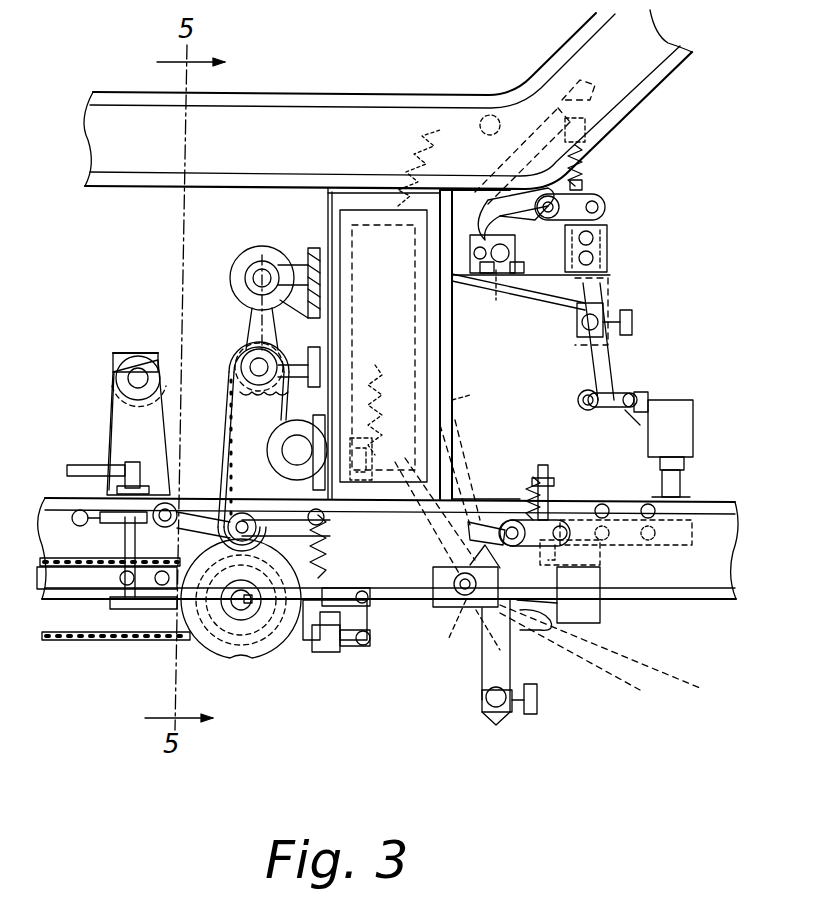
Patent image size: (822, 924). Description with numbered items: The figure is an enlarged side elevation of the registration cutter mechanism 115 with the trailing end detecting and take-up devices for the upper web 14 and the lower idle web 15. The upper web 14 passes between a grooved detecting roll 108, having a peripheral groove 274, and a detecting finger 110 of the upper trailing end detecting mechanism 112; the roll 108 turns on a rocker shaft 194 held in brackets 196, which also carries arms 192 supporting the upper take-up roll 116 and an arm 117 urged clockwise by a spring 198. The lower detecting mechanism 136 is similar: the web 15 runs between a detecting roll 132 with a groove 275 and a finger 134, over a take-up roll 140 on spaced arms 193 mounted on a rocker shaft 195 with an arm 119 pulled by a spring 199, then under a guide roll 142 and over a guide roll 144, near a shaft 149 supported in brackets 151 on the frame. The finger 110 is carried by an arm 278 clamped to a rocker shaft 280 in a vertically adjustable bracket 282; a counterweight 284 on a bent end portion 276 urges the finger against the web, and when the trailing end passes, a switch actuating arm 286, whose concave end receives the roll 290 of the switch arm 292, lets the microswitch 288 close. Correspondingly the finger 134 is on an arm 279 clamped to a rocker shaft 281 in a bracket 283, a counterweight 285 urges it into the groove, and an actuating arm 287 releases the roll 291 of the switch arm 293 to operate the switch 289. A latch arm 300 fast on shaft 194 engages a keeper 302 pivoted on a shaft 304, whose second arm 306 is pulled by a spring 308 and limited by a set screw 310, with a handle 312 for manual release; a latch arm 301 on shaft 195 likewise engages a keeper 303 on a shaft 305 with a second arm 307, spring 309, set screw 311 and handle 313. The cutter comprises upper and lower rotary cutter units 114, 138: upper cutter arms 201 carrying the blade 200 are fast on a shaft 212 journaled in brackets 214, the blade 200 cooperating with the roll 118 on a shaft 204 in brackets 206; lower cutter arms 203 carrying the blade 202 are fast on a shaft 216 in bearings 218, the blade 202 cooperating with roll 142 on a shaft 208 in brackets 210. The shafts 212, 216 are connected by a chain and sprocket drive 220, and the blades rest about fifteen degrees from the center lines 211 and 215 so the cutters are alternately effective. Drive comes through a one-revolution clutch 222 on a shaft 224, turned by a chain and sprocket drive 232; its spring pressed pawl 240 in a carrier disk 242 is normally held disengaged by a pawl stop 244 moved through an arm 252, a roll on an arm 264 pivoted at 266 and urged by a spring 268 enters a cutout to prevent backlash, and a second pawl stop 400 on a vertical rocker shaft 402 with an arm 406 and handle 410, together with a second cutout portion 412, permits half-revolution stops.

The web 14 is at (265, 313).
The idle web 15 is at (232, 433).
The grooved detecting roll 108 is at (528, 270).
The detecting finger 110 is at (563, 306).
The upper trailing end detecting mechanism 112 is at (452, 312).
The upper rotary cutter unit 114 is at (220, 340).
The registration cutter mechanism 115 is at (205, 262).
The upper take-up roll 116 is at (333, 242).
The arm 117 is at (396, 232).
The roll 118 is at (243, 256).
The arm 119 is at (442, 428).
The detecting roll 132 is at (462, 608).
The detecting finger 134 is at (470, 610).
The lower trailing end detecting mechanism 136 is at (378, 648).
The lower rotary cutter unit 138 is at (237, 468).
The take-up roll 140 is at (462, 460).
The guide roll 142 is at (277, 432).
The guide roll 144 is at (116, 385).
The shaft 149 is at (127, 375).
The brackets 151 is at (113, 424).
The arms 192 is at (446, 397).
The spaced arms 193 is at (439, 516).
The rocker shaft 194 is at (498, 262).
The rocker shaft 195 is at (440, 610).
The brackets 196 is at (455, 275).
The spring 198 is at (400, 200).
The spring 199 is at (372, 458).
The upper cutter blade 200 is at (275, 356).
The upper cutter arms 201 is at (244, 352).
The lower cutter blade 202 is at (150, 604).
The lower cutter arms 203 is at (236, 490).
The shaft 204 is at (262, 268).
The brackets 206 is at (310, 262).
The shaft 208 is at (300, 450).
The brackets 210 is at (366, 400).
The center line 211 is at (258, 307).
The shaft 212 is at (243, 366).
The brackets 214 is at (330, 348).
The center line 215 is at (252, 488).
The shaft 216 is at (237, 497).
The bearings 218 is at (330, 519).
The chain and sprocket drive 220 is at (242, 490).
The one-revolution clutch 222 is at (253, 688).
The shaft 224 is at (240, 602).
The chain and sprocket drive 232 is at (85, 642).
The pawl 240 is at (298, 642).
The pawl carrier disk 242 is at (268, 658).
The pawl stop 244 is at (338, 588).
The arm 252 is at (328, 654).
The arm 264 is at (188, 530).
The pivot 266 is at (160, 512).
The spring 268 is at (324, 560).
The peripheral groove 274 is at (513, 320).
The intermediate groove 275 is at (436, 606).
The right angle bent end portion 276 is at (612, 318).
The arm 278 is at (600, 300).
The arm 279 is at (512, 695).
The rocker shaft 280 is at (605, 334).
The rocker shaft 281 is at (505, 718).
The vertically adjustable bracket 282 is at (603, 300).
The vertically adjustable bracket 283 is at (490, 706).
The counterweight 284 is at (634, 324).
The counterweight 285 is at (538, 704).
The switch actuating arm 286 is at (578, 398).
The actuating arm 287 is at (486, 630).
The microswitch 288 is at (695, 408).
The switch 289 is at (602, 607).
The roll 290 is at (608, 406).
The roll 291 is at (510, 635).
The switch arm 292 is at (642, 416).
The switch arm 293 is at (548, 612).
The latch arm 300 is at (486, 258).
The latch arm 301 is at (520, 546).
The keeper 302 is at (520, 240).
The keeper 303 is at (478, 522).
The shaft 304 is at (546, 216).
The shaft 305 is at (533, 478).
The second arm 306 is at (590, 204).
The second arm 307 is at (570, 524).
The spring 308 is at (586, 130).
The spring 309 is at (552, 479).
The set screw 310 is at (588, 196).
The adjustable set screw 311 is at (562, 510).
The handle 312 is at (600, 207).
The handle 313 is at (575, 540).
The second pawl stop 400 is at (162, 612).
The vertical rocker shaft 402 is at (120, 575).
The arm 406 is at (102, 524).
The handle 410 is at (67, 466).
The second cutout portion 412 is at (247, 656).